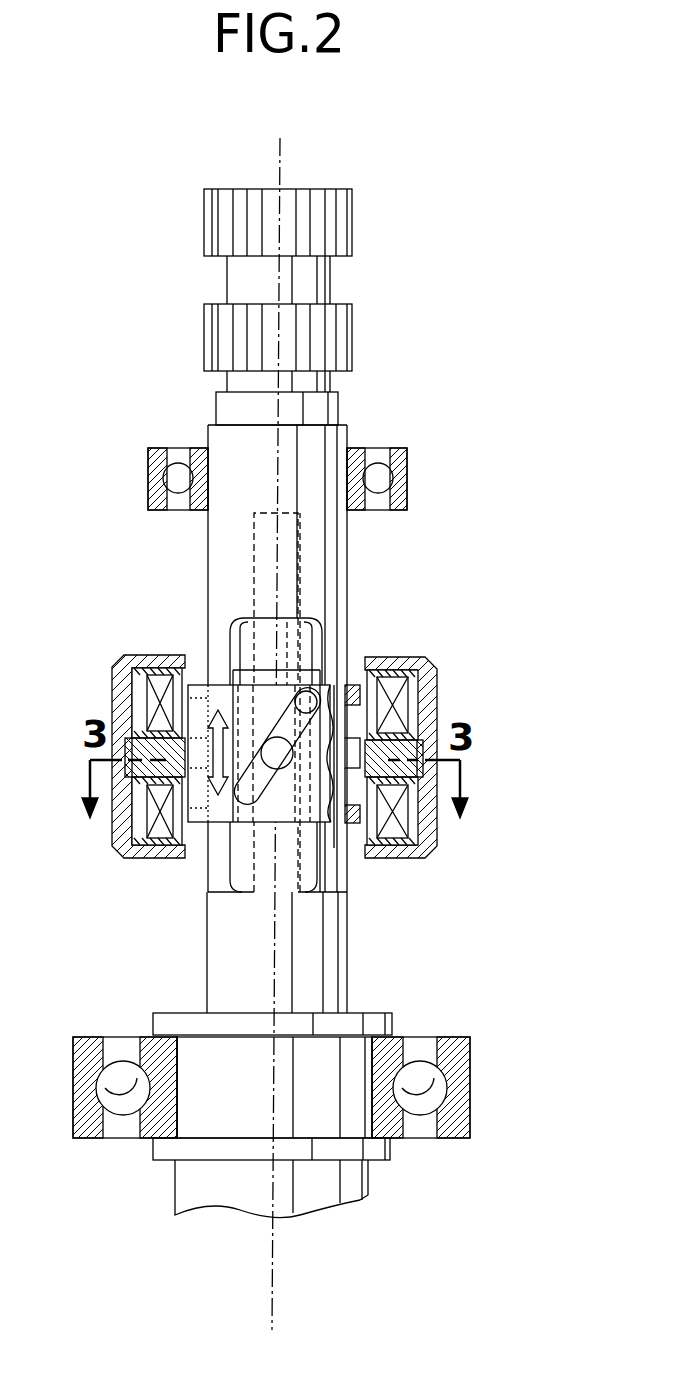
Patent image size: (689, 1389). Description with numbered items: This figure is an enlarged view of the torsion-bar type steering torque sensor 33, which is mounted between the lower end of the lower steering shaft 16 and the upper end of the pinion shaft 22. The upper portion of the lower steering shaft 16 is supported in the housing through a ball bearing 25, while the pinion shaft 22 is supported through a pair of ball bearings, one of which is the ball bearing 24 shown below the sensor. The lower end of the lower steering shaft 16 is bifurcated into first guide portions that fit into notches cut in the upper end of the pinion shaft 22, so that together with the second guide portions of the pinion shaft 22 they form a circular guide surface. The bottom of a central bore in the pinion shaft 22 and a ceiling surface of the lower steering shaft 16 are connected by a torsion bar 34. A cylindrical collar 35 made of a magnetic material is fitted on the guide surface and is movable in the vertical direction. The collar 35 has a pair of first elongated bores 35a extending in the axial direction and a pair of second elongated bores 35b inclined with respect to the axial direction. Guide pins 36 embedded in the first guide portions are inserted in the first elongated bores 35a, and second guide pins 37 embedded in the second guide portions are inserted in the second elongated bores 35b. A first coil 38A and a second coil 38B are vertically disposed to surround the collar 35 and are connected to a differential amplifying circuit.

The lower steering shaft 16 is at (348, 548).
The pinion shaft 22 is at (349, 965).
The ball bearing 24 is at (432, 1092).
The ball bearing 25 is at (378, 474).
The steering torque sensor 33 is at (442, 657).
The torsion bar 34 is at (288, 632).
The collar 35 is at (220, 684).
The first elongated bore 35a is at (355, 708).
The second elongated bore 35b is at (312, 697).
The guide pin 36 is at (140, 722).
The second guide pin 37 is at (282, 760).
The first coil 38A is at (150, 700).
The second coil 38B is at (150, 810).